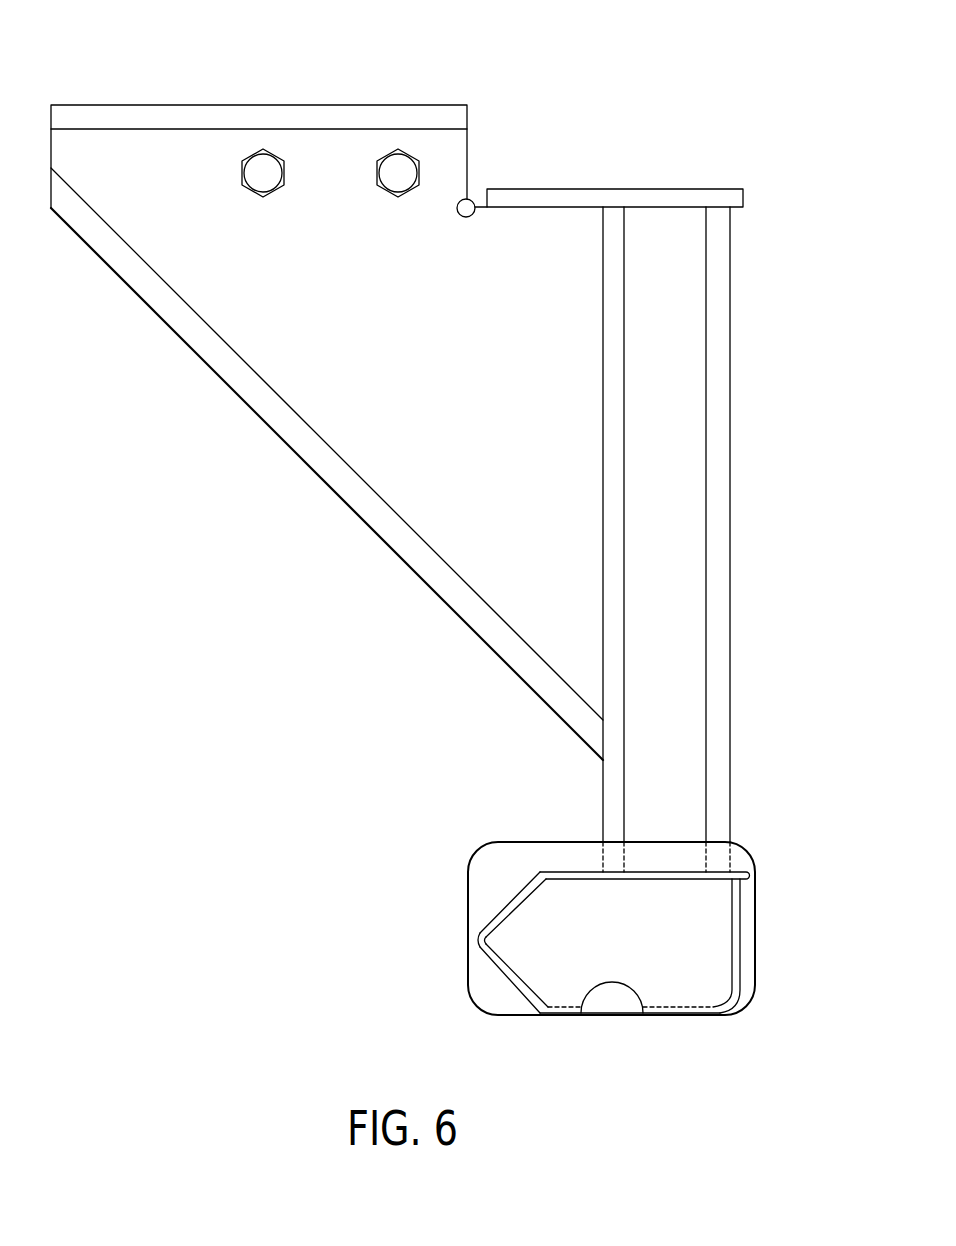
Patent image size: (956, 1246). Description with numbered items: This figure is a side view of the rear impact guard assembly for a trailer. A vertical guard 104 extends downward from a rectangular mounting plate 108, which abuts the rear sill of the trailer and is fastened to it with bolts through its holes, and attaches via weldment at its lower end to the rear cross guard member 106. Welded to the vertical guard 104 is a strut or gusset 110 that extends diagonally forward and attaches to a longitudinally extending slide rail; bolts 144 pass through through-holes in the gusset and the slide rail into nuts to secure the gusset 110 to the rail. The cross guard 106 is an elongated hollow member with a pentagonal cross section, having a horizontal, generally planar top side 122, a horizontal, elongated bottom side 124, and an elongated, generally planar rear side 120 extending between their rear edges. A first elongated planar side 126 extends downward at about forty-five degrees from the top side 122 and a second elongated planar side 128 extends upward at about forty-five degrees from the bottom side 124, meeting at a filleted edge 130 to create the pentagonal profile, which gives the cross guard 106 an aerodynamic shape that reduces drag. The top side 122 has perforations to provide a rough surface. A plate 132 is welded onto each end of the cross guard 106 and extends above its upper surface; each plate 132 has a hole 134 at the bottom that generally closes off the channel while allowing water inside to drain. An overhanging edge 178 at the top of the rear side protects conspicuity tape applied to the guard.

The vertical guard 104 is at (730, 527).
The rear cross guard member 106 is at (710, 1044).
The rectangular mounting plate 108 is at (685, 198).
The gusset 110 is at (298, 362).
The rear side 120 is at (738, 938).
The top side 122 is at (613, 936).
The bottom side 124 is at (560, 1012).
The first elongated planar side 126 is at (498, 908).
The second elongated planar side 128 is at (498, 970).
The filleted edge 130 is at (478, 940).
The plate 132 is at (515, 850).
The hole 134 is at (603, 997).
The bolt 144 is at (398, 173).
The lip 178 is at (752, 876).